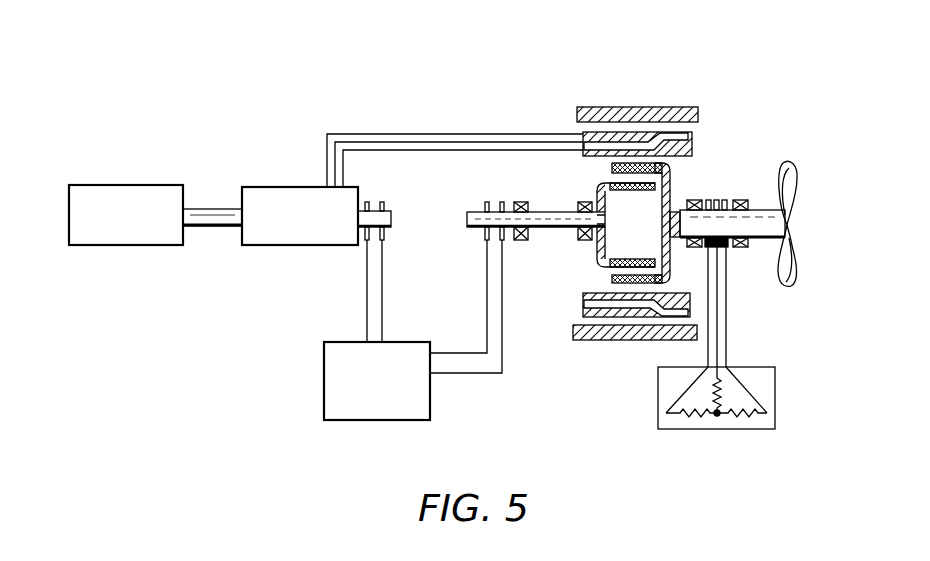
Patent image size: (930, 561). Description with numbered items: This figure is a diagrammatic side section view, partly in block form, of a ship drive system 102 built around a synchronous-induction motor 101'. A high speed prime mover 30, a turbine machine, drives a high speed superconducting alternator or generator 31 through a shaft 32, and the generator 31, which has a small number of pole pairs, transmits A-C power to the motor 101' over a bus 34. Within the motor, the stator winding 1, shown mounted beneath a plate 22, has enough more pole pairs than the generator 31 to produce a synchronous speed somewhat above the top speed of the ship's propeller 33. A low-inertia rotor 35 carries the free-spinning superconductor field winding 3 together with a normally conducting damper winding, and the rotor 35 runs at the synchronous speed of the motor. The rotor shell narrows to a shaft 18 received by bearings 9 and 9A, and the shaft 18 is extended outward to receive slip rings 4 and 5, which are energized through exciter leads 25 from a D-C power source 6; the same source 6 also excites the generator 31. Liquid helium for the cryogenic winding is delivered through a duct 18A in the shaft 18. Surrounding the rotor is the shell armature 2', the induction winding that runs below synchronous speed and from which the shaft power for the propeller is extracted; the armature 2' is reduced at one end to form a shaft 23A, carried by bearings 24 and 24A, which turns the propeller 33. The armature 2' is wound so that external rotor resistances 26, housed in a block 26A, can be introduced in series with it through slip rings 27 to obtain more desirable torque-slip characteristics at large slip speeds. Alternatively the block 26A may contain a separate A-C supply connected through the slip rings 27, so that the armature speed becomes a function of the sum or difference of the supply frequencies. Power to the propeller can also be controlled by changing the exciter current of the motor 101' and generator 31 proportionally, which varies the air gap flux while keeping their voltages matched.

The ship drive system 102 is at (493, 80).
The high speed prime mover 30 is at (113, 185).
The shaft 32 is at (204, 212).
The generator 31 is at (278, 187).
The bus 34 is at (407, 146).
The upper mounting plate 22 is at (648, 105).
The stator winding 1 is at (692, 140).
The shell armature 2' is at (683, 204).
The superconductor field winding 3 is at (640, 260).
The rotor 35 is at (597, 245).
The shaft 18 is at (470, 214).
The duct 18A is at (597, 222).
The slip ring 4 is at (481, 240).
The slip ring 5 is at (502, 238).
The bearing 9 is at (518, 200).
The bearing 9A is at (582, 200).
The synchronous-induction motor 101' is at (621, 353).
The shaft 23A is at (774, 222).
The bearing 24 is at (695, 200).
The bearing 24A is at (742, 200).
The slip rings 27 is at (709, 250).
The propeller 33 is at (795, 180).
The D-C power source 6 is at (378, 425).
The exciter leads 25 is at (457, 362).
The block 26A is at (777, 407).
The resistances 26 is at (713, 418).